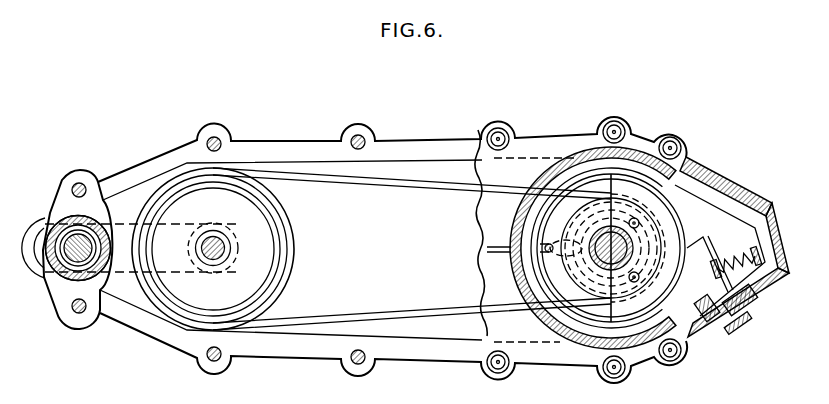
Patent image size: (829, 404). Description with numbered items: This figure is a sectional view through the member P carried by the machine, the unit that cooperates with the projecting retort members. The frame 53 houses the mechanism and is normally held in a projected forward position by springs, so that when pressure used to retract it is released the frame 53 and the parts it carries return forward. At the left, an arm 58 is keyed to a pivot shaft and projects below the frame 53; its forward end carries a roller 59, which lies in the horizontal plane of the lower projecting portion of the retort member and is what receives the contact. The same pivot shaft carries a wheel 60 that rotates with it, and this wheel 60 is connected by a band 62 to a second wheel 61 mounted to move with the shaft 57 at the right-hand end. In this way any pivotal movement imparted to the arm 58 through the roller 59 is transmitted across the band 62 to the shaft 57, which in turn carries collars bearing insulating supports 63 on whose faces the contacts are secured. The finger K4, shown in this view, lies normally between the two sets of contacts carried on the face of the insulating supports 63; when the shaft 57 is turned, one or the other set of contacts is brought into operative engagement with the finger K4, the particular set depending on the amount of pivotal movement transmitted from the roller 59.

The member carried by the machine P is at (531, 139).
The frame 53 is at (522, 280).
The shaft 57 is at (642, 259).
The arm 58 is at (172, 227).
The roller 59 is at (50, 273).
The wheel 60 is at (285, 245).
The wheel 61 is at (526, 217).
The band 62 is at (388, 184).
The insulating supports 63 is at (665, 228).
The finger K4 is at (732, 253).